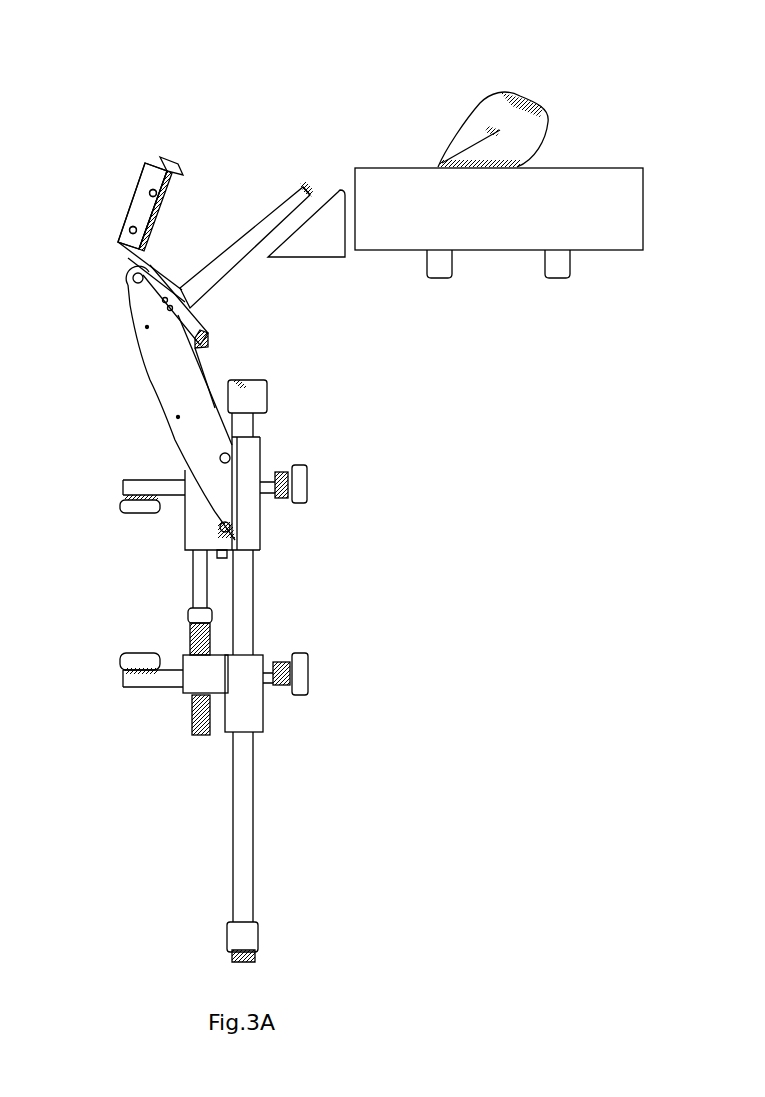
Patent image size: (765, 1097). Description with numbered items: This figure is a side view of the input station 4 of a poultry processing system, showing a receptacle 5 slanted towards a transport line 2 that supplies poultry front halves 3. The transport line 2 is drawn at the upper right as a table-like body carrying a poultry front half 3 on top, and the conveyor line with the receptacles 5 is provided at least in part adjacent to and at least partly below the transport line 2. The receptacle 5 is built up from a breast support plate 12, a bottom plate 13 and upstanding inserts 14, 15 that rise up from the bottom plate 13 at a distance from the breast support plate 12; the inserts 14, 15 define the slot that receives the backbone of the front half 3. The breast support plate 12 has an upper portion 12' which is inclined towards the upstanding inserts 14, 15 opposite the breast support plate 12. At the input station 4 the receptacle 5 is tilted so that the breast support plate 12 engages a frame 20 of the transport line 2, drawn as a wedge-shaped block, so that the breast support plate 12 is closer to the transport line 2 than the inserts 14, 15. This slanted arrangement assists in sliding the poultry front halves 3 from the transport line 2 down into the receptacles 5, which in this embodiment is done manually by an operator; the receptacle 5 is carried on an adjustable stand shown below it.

The transport line 2 is at (598, 168).
The poultry front halves 3 is at (552, 122).
The input station 4 is at (343, 133).
The receptacle 5 is at (93, 240).
The breast support plate 12 is at (228, 211).
The upper portion of the breast support plate 12' is at (273, 142).
The bottom plate 13 is at (130, 260).
The upstanding insert 14 is at (130, 180).
The upstanding insert 15 is at (122, 178).
The frame 20 is at (312, 260).